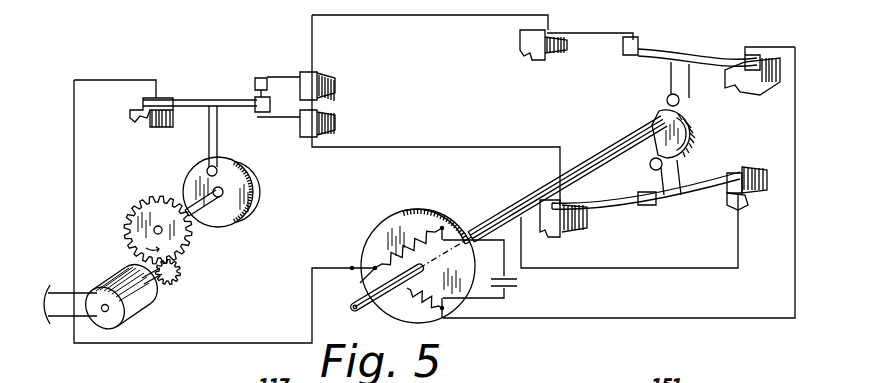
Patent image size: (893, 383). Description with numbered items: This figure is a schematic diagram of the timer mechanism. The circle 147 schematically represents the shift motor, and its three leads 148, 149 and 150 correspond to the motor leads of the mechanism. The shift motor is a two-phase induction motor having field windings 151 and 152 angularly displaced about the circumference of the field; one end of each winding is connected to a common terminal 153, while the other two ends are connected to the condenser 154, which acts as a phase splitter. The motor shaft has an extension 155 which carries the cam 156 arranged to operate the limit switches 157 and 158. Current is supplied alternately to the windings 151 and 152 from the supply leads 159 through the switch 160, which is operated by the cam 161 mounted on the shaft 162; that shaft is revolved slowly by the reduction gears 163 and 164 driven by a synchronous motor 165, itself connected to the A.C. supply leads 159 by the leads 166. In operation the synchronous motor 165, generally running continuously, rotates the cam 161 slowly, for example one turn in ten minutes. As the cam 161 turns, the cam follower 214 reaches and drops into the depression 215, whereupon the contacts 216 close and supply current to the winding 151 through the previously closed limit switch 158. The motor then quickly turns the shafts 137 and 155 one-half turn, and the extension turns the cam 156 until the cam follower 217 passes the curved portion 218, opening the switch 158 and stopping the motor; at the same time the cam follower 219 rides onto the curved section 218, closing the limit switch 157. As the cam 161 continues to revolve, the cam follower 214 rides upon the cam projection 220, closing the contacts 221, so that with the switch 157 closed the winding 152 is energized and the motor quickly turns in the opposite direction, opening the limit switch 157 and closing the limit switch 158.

The shaft 137 is at (352, 308).
The circle 147 is at (378, 250).
The lead 148 is at (352, 267).
The lead 149 is at (456, 218).
The lead 150 is at (455, 320).
The field winding 151 is at (412, 226).
The field winding 152 is at (406, 292).
The common terminal 153 is at (358, 283).
The condenser 154 is at (517, 283).
The extension 155 is at (605, 152).
The cam 156 is at (683, 135).
The limit switch 157 is at (603, 44).
The limit switch 158 is at (660, 203).
The supply leads 159 is at (60, 290).
The switch 160 is at (308, 101).
The cam 161 is at (253, 188).
The shaft 162 is at (194, 219).
The reduction gear 163 is at (180, 257).
The reduction gear 164 is at (174, 279).
The synchronous motor 165 is at (138, 307).
The leads 166 is at (88, 290).
The cam follower 214 is at (213, 167).
The depression 215 is at (207, 173).
The contacts 216 is at (253, 113).
The cam follower 217 is at (652, 166).
The curved portion 218 is at (694, 117).
The cam follower 219 is at (668, 98).
The cam projection 220 is at (231, 164).
The contacts 221 is at (253, 97).